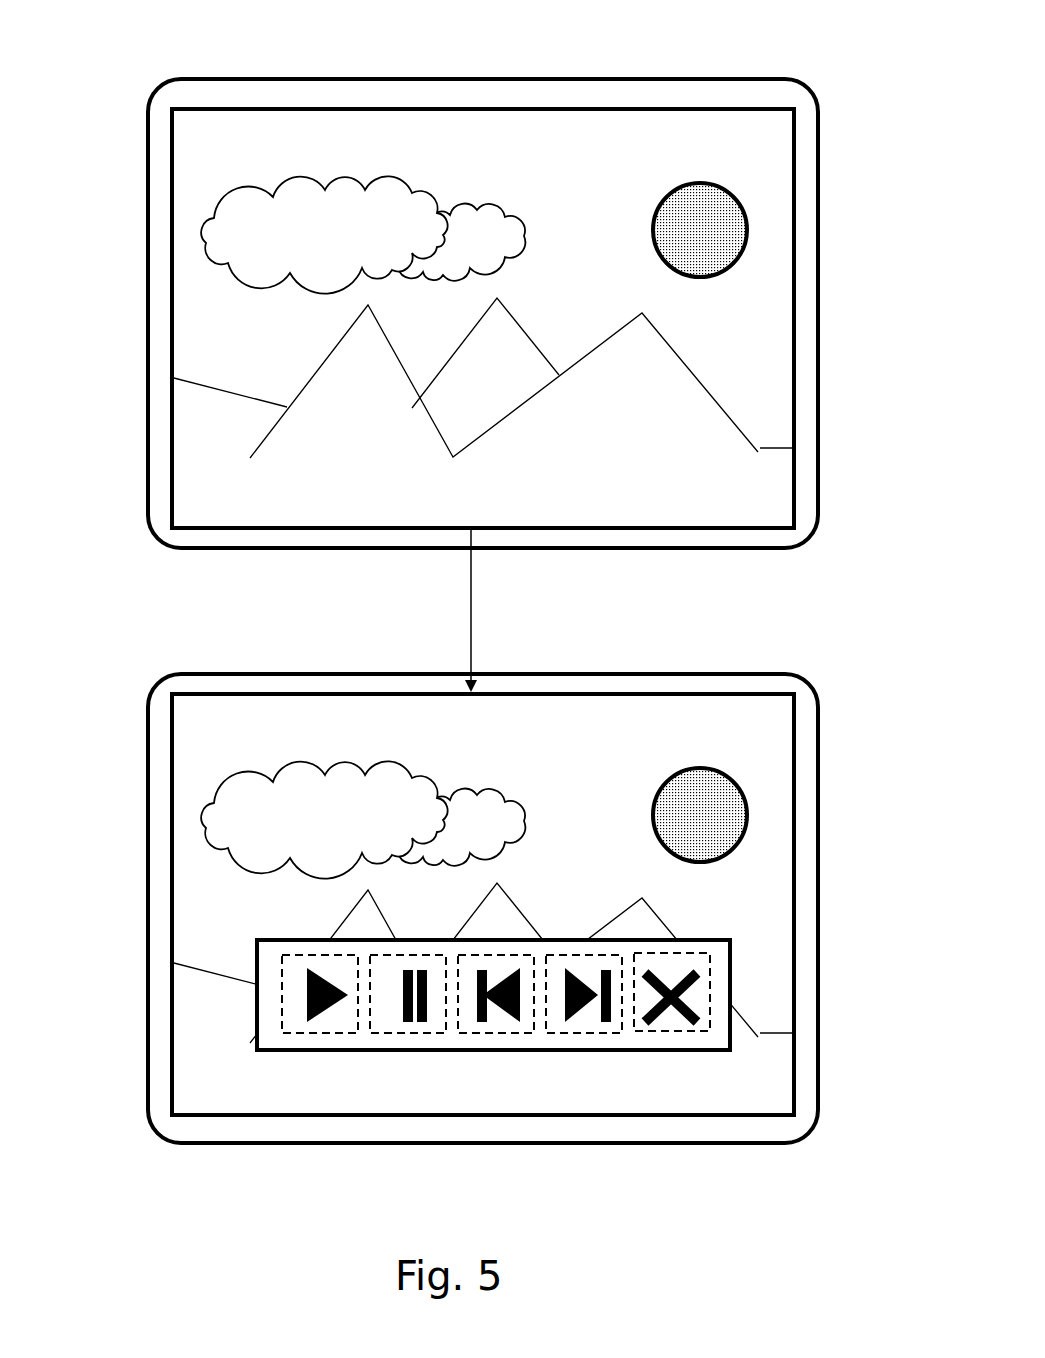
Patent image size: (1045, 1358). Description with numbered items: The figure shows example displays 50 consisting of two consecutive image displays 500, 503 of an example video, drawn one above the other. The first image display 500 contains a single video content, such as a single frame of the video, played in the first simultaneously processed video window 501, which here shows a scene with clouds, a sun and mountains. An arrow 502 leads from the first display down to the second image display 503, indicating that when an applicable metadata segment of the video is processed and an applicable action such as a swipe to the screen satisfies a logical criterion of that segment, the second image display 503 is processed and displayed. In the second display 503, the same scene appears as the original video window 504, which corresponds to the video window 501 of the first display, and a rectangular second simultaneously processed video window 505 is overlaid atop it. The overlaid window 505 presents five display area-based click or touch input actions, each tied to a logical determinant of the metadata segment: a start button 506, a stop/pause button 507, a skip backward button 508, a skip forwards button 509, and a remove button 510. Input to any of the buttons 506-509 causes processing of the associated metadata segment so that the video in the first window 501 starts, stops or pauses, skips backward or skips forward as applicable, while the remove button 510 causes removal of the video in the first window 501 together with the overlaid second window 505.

The example displays 50 is at (440, 274).
The first image display 500 is at (143, 147).
The first simultaneously processed video window 501 is at (170, 282).
The transition arrow 502 is at (470, 650).
The second image display 503 is at (143, 733).
The original video window 504 is at (170, 868).
The second simultaneously processed video window 505 is at (389, 1052).
The start button 506 is at (293, 1033).
The stop/pause button 507 is at (393, 1033).
The skip backward button 508 is at (493, 1033).
The skip forwards button 509 is at (593, 1033).
The remove button 510 is at (693, 1033).